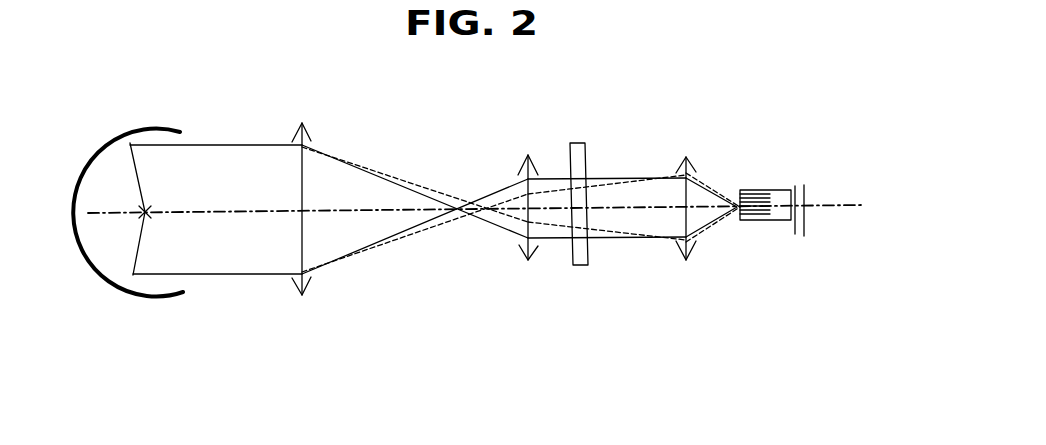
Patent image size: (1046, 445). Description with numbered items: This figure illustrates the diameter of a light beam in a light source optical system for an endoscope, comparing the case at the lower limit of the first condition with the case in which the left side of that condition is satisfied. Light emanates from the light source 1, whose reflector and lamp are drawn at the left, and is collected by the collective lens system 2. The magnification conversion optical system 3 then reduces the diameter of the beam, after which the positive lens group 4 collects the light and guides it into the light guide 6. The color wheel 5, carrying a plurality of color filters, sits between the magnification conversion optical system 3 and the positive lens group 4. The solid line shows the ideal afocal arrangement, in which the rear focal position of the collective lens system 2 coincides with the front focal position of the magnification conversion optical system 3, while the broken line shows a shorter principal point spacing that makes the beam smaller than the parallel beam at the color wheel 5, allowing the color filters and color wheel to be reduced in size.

The light source 1 is at (128, 136).
The collective lens system 2 is at (297, 141).
The magnification conversion optical system 3 is at (533, 160).
The positive lens group 4 is at (686, 193).
The color wheel 5 is at (588, 264).
The light guide 6 is at (772, 219).